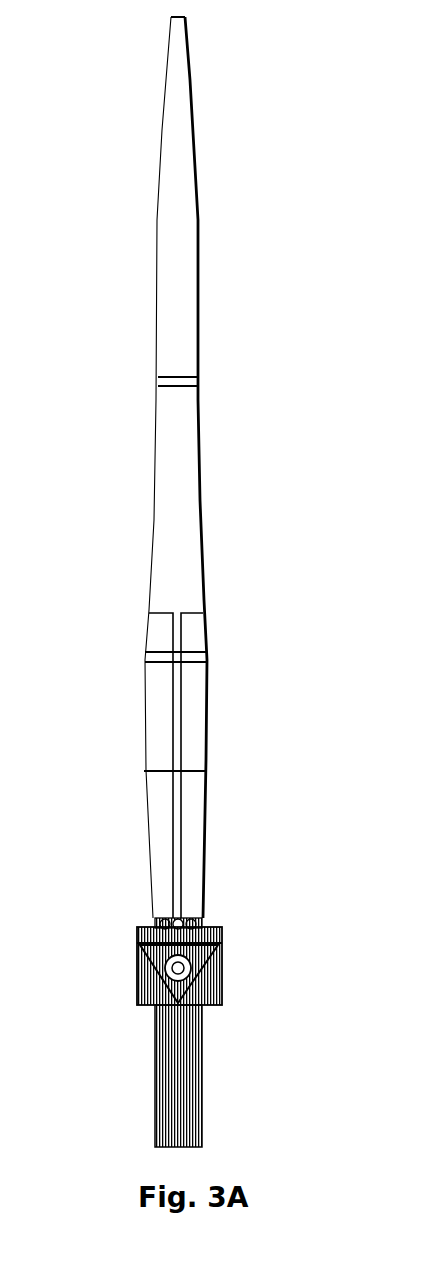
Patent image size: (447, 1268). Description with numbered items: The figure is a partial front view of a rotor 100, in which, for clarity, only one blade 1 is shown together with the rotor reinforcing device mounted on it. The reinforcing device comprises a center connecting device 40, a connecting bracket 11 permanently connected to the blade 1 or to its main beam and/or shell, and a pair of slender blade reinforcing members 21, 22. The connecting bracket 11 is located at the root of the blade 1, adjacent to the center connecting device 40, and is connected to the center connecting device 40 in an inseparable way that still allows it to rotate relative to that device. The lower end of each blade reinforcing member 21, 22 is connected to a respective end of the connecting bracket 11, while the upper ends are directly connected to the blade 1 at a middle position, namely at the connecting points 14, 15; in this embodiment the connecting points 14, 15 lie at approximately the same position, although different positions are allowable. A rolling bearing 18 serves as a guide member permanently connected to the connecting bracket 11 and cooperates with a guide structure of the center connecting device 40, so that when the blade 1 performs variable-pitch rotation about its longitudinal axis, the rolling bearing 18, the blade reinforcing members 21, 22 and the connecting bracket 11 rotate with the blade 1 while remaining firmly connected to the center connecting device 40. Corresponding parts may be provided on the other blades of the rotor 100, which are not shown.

The rotor 100 is at (238, 126).
The blade 1 is at (188, 526).
The connecting point 14 is at (172, 614).
The connecting point 15 is at (186, 613).
The blade reinforcing member 21 is at (173, 798).
The blade reinforcing member 22 is at (183, 798).
The connecting bracket 11 is at (203, 918).
The rolling bearing 18 is at (221, 942).
The center connecting device 40 is at (210, 986).